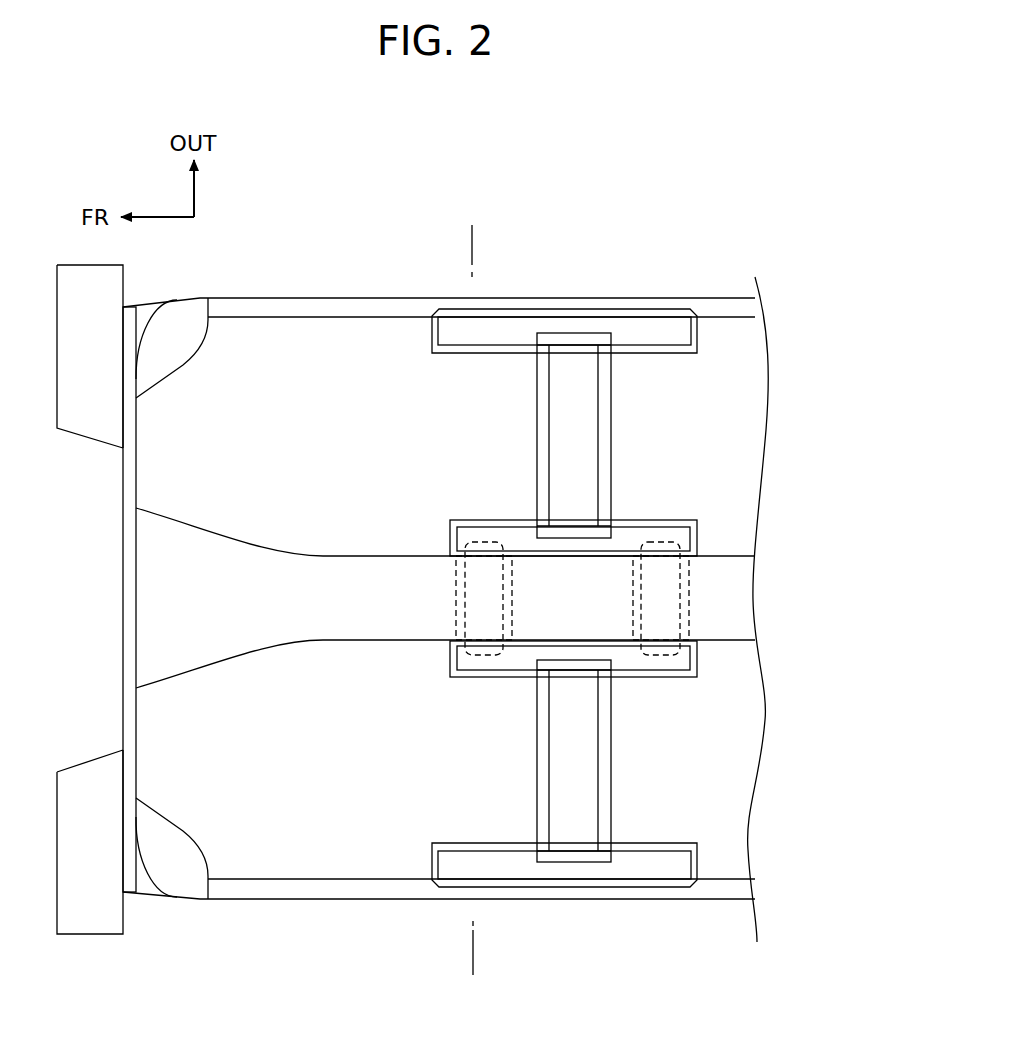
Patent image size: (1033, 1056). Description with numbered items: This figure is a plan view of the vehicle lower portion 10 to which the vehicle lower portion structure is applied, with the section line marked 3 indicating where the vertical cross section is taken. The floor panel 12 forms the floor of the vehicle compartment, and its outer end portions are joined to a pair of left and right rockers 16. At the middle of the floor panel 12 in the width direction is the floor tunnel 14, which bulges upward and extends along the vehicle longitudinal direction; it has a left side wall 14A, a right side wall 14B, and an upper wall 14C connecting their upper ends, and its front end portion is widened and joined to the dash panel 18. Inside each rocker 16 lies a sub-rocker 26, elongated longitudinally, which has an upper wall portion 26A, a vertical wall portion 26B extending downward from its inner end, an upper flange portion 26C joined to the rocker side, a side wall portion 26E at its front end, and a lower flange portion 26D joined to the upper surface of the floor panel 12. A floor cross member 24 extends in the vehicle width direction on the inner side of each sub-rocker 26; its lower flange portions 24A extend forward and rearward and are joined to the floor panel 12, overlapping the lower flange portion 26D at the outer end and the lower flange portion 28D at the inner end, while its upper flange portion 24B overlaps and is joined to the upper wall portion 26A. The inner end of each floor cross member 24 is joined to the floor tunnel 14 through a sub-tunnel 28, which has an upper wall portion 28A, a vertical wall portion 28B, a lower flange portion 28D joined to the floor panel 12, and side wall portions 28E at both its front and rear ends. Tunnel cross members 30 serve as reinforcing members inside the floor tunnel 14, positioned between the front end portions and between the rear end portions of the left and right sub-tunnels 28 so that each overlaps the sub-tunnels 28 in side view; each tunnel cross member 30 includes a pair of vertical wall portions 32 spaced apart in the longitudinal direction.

The section line 3- 3 is at (471, 232).
The vehicle lower portion 10 is at (365, 194).
The floor panel 12 is at (277, 331).
The floor tunnel 14 is at (220, 529).
The left side wall 14A is at (358, 643).
The right side wall 14B is at (352, 556).
The upper wall 14C is at (295, 583).
The rocker 16 is at (230, 294).
The dash panel 18 is at (136, 718).
The floor cross member 24 is at (614, 427).
The lower flange portion 24A is at (538, 422).
The upper flange portion 24B is at (565, 338).
The sub-rocker 26 is at (650, 306).
The upper wall portion 26A is at (672, 328).
The vertical wall portion 26B is at (650, 346).
The upper flange portion 26C is at (582, 313).
The lower flange portion 26D is at (462, 347).
The side wall portion 26E is at (435, 320).
The sub-tunnel 28 is at (691, 516).
The upper wall portion 28A is at (508, 533).
The vertical wall portion 28B is at (637, 523).
The lower flange portion 28D is at (462, 518).
The side wall portion 28E is at (450, 540).
The tunnel cross member 30 is at (442, 574).
The vertical wall portion 32 is at (456, 618).